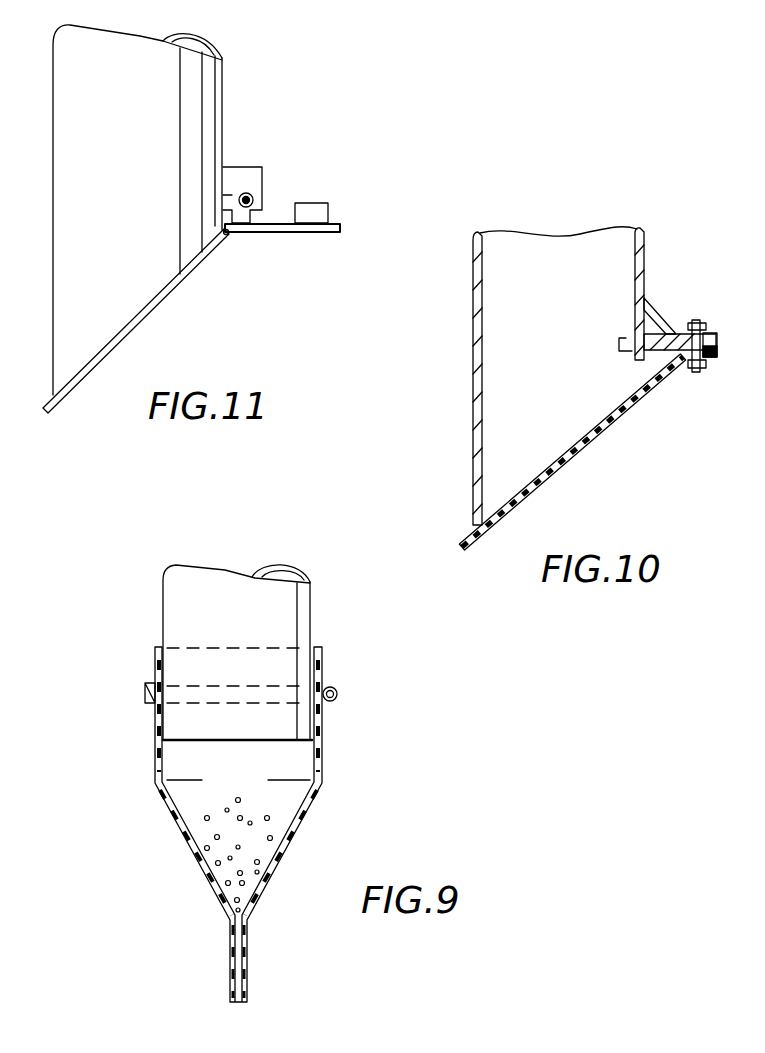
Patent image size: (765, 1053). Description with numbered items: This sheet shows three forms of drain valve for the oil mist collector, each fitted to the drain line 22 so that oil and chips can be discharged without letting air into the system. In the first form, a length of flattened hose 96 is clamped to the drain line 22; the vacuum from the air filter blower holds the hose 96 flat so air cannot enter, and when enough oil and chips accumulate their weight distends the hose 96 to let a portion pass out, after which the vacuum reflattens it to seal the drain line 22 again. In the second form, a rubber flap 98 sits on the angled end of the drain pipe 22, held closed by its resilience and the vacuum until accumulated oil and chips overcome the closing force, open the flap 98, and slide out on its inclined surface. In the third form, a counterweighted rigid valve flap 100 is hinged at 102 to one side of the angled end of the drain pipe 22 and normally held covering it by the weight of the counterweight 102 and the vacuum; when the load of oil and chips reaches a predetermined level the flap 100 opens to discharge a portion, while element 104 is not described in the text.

In FIG. 11, the drain line 22 is at (212, 92).
In FIG. 10, the drain line 22 is at (473, 388).
In FIG. 9, the drain line 22 is at (313, 622).
In FIG. 9, the flattened hose 96 is at (323, 755).
In FIG. 10, the rubber flap 98 is at (572, 443).
In FIG. 11, the counterweighted rigid valve flap 100 is at (158, 306).
In FIG. 11, the counterweight 102 is at (256, 194).
In FIG. 11, the mounting block 104 is at (317, 202).